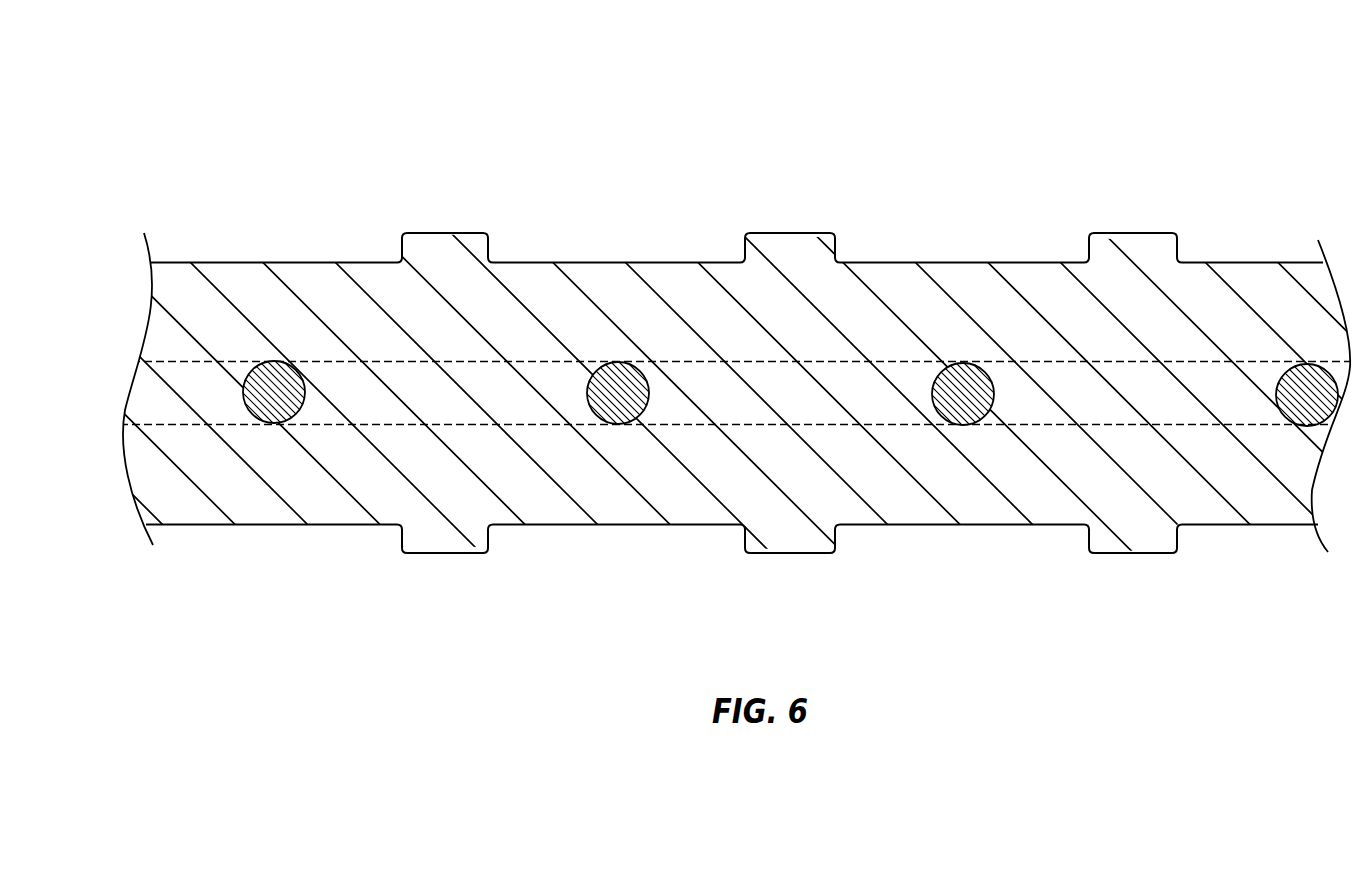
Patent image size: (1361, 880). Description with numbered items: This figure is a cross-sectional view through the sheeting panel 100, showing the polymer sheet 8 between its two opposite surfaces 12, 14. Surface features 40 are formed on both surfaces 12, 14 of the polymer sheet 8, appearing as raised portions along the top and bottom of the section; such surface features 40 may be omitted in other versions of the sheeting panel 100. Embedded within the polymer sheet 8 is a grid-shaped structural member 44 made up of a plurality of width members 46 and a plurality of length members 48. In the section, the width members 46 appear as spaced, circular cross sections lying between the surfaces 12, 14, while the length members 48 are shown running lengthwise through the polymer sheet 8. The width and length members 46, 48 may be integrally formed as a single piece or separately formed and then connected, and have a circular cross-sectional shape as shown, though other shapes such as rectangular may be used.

The sheeting panel 100 is at (680, 350).
The polymer sheet 8 is at (940, 260).
The surface 12 is at (595, 262).
The surface 14 is at (567, 524).
The surface features 40 is at (1145, 235).
The structural member 44 is at (977, 436).
The width members 46 is at (262, 416).
The length members 48 is at (383, 424).